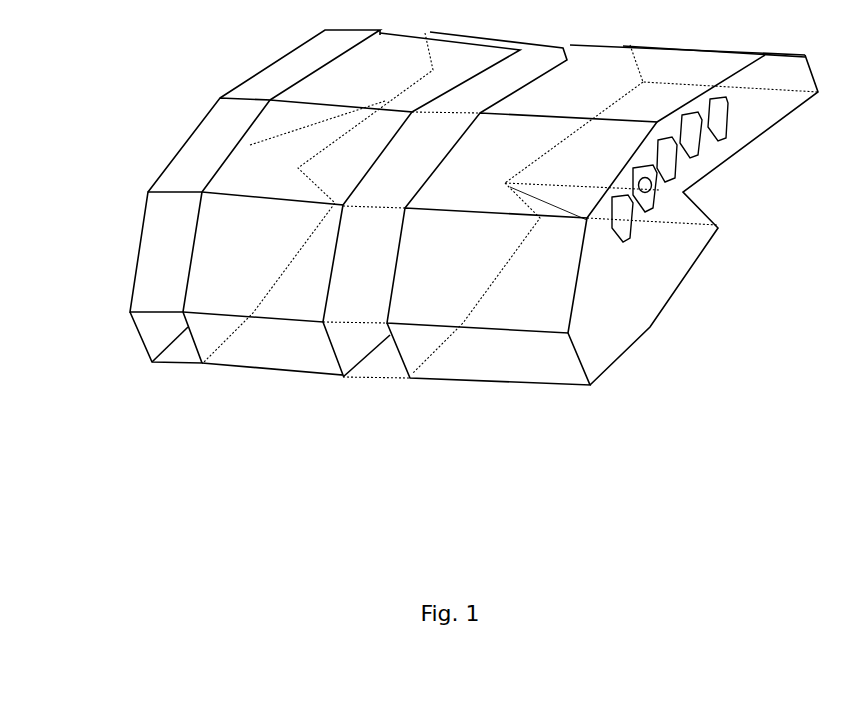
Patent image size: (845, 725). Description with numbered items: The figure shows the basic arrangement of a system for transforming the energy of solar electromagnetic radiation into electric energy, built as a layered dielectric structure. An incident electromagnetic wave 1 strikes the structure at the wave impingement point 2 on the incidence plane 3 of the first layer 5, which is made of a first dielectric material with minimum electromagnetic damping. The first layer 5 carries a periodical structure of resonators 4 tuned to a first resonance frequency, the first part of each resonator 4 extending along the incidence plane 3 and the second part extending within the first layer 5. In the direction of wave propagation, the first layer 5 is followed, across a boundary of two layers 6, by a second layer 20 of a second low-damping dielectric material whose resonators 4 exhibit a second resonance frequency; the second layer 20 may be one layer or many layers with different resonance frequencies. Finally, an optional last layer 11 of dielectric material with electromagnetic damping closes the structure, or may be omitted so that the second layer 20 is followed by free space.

The electromagnetic wave 1 is at (656, 184).
The wave impingement point 2 is at (653, 200).
The incidence plane 3 is at (633, 280).
The resonator 4 is at (693, 143).
The first layer of the dielectric structure 5 is at (588, 397).
The boundary of two layers 6 is at (418, 176).
The last layer of the dielectric structure 11 is at (163, 205).
The second layer of the dielectric structure 20 is at (345, 375).